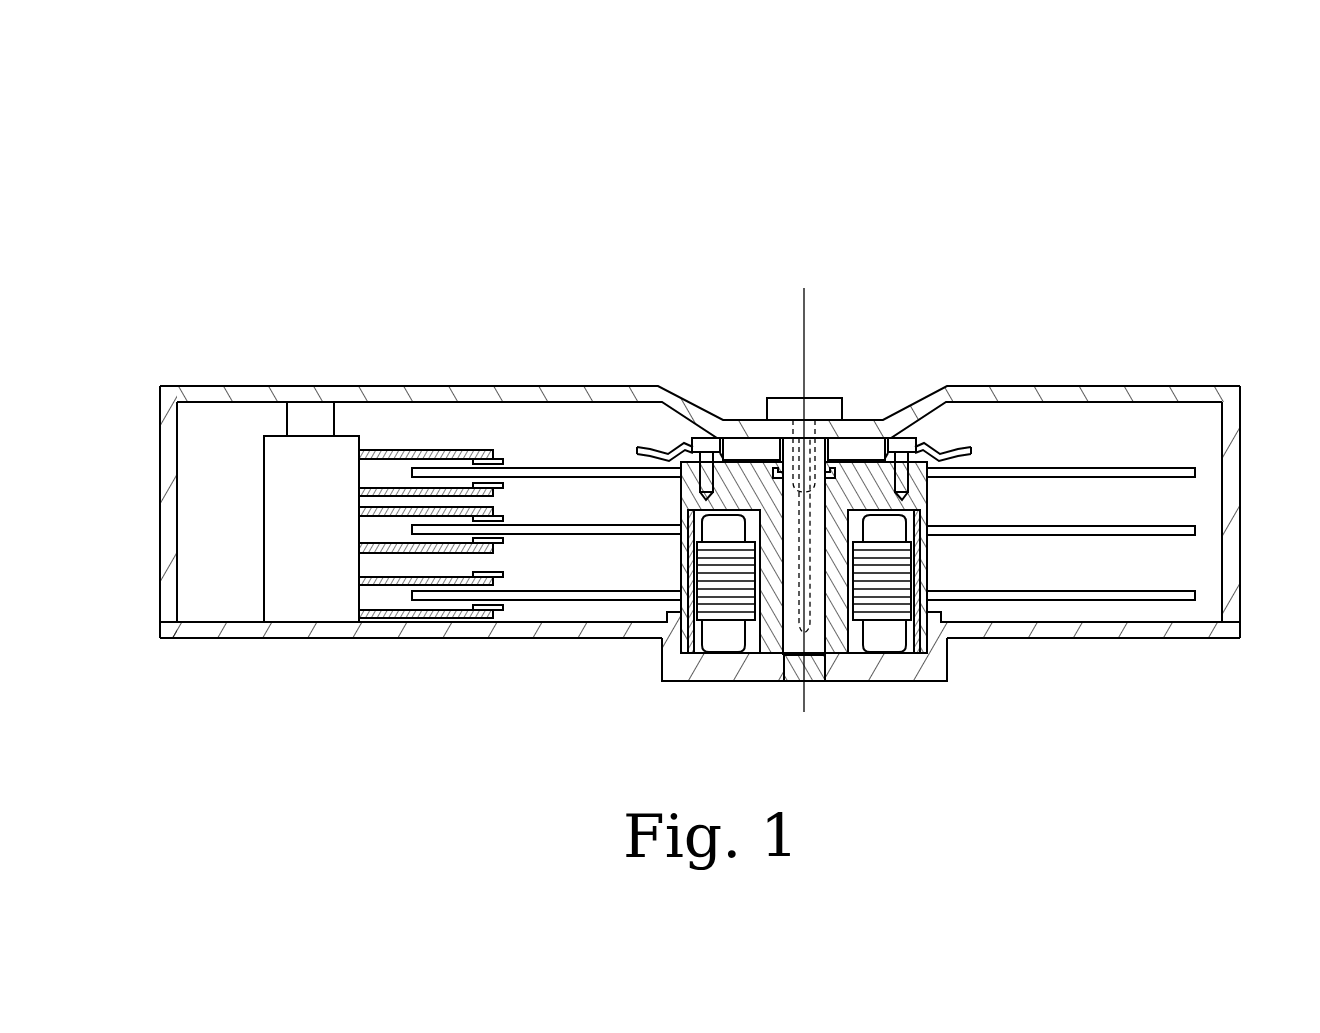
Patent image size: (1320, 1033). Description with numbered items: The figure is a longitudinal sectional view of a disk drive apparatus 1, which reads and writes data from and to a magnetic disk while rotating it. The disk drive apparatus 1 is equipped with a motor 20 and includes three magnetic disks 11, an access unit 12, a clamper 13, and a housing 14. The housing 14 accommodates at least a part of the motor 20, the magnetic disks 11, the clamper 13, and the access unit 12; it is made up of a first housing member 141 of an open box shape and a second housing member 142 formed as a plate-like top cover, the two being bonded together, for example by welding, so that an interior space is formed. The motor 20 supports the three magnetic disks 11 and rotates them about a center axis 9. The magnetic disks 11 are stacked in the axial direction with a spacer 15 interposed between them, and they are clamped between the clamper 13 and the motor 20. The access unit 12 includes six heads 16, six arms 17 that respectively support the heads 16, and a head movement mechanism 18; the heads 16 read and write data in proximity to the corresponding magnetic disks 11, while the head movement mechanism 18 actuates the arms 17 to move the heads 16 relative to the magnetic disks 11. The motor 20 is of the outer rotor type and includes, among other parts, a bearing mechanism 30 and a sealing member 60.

The disk drive apparatus 1 is at (814, 155).
The center axis 9 is at (803, 317).
The magnetic disk 11 is at (1098, 473).
The access unit 12 is at (466, 430).
The clamper 13 is at (642, 450).
The housing 14 is at (700, 530).
The first housing member 141 is at (1233, 620).
The second housing member 142 is at (1140, 387).
The spacer 15 is at (935, 568).
The head 16 is at (502, 452).
The arm 17 is at (408, 450).
The head movement mechanism 18 is at (323, 460).
The motor 20 is at (848, 450).
The bearing mechanism 30 is at (777, 438).
The sealing member 60 is at (786, 684).